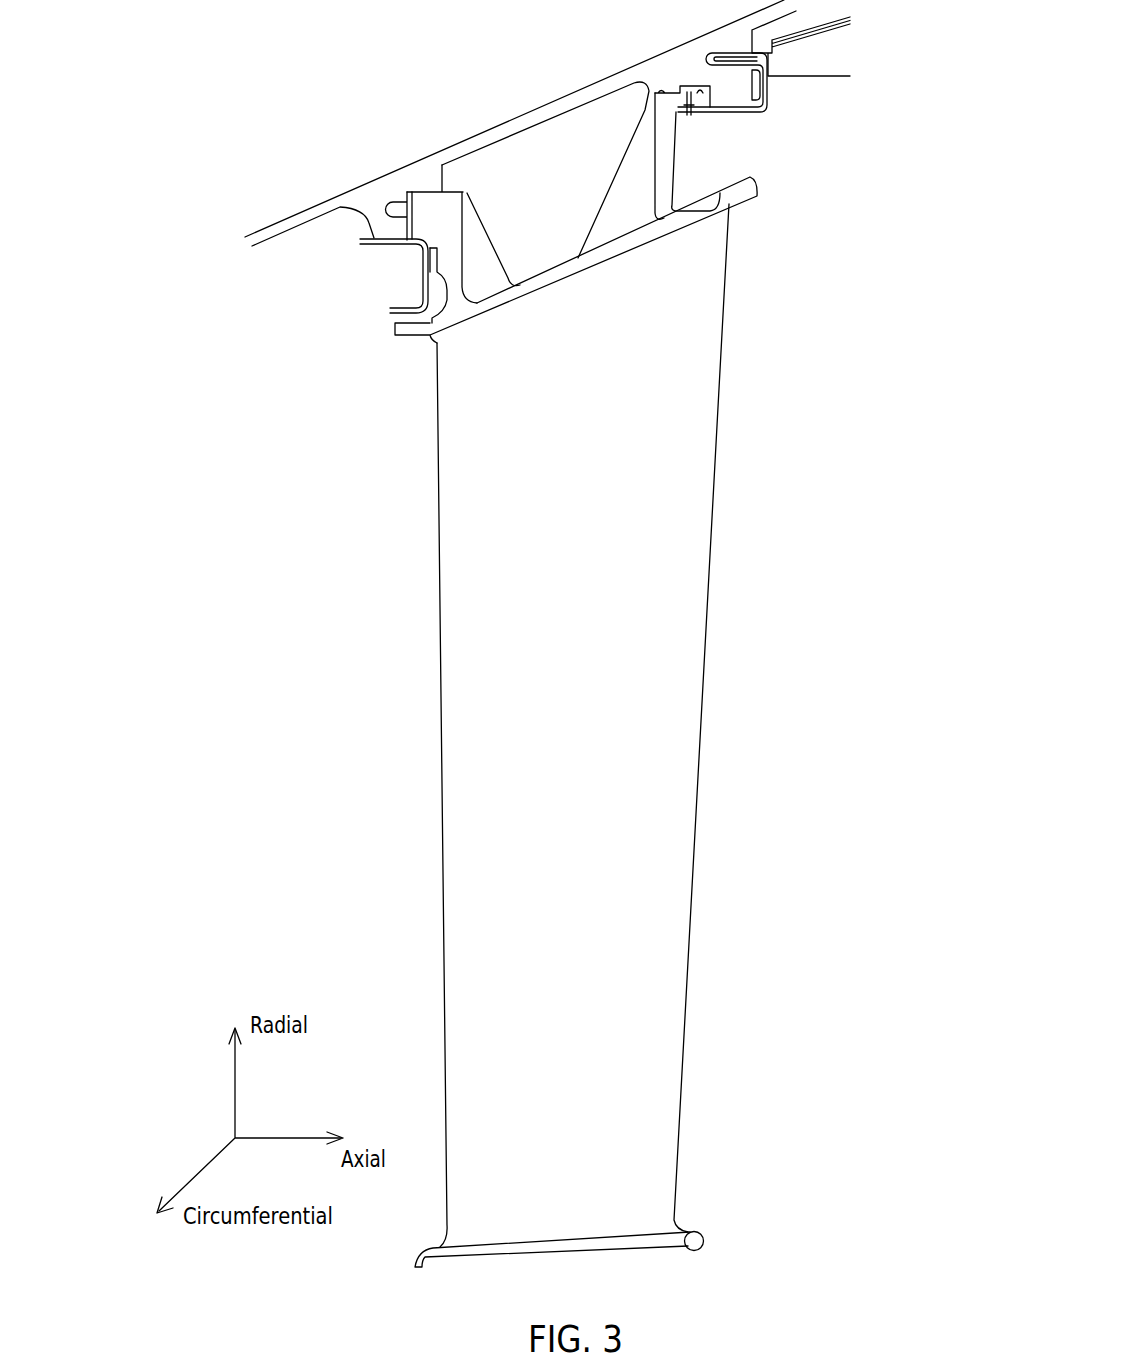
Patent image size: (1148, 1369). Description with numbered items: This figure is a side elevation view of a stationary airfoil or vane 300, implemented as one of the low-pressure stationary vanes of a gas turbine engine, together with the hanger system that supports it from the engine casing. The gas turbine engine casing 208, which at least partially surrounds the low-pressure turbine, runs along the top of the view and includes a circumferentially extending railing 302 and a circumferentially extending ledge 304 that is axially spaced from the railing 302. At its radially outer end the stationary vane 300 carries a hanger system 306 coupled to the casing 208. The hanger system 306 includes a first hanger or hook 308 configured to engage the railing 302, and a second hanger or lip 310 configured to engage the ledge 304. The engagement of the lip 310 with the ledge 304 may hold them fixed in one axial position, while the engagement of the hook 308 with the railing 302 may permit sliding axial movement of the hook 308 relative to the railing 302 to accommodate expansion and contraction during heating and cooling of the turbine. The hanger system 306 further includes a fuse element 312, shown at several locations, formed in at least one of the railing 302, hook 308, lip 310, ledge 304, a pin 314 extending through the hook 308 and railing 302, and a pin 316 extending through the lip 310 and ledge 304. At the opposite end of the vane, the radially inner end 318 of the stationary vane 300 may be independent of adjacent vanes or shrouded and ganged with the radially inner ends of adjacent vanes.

The gas turbine engine casing 208 is at (528, 112).
The stationary vane 300 is at (583, 848).
The railing 302 is at (373, 243).
The ledge 304 is at (753, 113).
The hanger system 306 is at (355, 335).
The hook 308 is at (448, 208).
The lip 310 is at (699, 90).
The fuse element 312 is at (437, 190).
The pin 314 is at (407, 192).
The pin 316 is at (689, 115).
The radially inner end 318 is at (698, 1232).